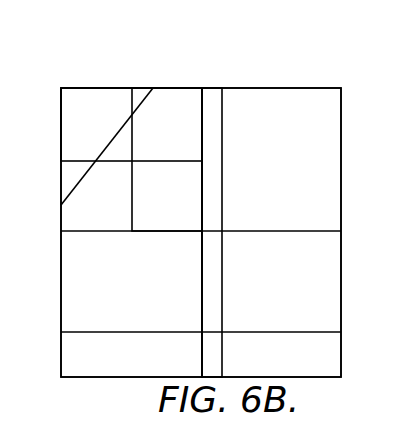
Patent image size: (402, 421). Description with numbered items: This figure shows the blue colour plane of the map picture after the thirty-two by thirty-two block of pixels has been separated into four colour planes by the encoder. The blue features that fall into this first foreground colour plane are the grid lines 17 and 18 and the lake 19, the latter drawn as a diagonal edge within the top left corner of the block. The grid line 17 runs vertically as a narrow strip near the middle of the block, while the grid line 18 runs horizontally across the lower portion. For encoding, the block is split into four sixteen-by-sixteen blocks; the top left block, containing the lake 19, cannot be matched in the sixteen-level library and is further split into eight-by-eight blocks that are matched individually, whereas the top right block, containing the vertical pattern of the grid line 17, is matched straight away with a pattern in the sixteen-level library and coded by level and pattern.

The lake 19 is at (85, 106).
The grid line 18 is at (131, 331).
The grid line 17 is at (222, 292).